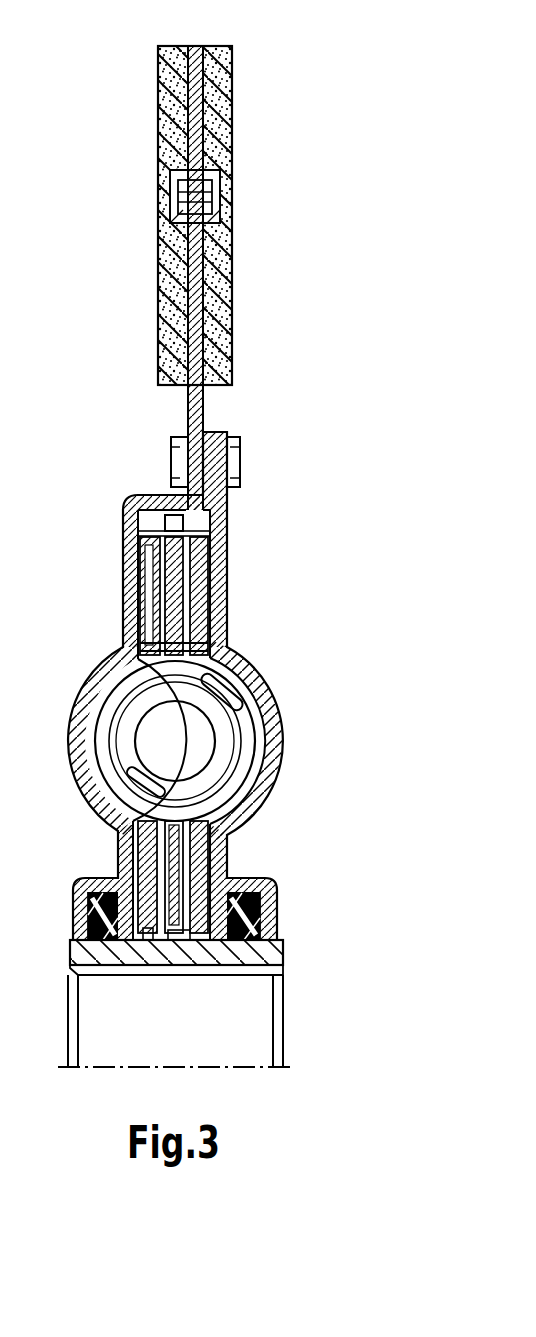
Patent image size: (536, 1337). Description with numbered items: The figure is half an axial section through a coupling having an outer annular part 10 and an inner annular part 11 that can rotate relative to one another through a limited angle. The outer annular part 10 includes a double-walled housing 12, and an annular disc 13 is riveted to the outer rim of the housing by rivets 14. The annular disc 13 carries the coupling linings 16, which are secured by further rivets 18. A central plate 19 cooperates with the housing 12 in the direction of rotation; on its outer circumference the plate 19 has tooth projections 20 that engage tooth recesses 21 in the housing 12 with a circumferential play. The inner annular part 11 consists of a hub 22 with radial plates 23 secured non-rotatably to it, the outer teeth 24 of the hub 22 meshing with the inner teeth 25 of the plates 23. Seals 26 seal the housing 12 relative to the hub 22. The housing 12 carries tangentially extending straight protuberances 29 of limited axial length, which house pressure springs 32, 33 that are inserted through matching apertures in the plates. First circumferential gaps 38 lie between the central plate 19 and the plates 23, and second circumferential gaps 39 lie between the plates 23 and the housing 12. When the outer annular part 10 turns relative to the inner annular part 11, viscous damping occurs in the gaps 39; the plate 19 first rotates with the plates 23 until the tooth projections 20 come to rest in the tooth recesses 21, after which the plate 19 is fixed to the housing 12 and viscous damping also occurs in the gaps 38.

The outer annular part 10 is at (84, 585).
The inner annular part 11 is at (318, 993).
The double-walled housing 12 is at (218, 600).
The annular disc 13 is at (193, 412).
The rivets 14 is at (238, 455).
The coupling linings 16 is at (232, 97).
The rivets 18 is at (205, 190).
The central plate 19 is at (175, 572).
The tooth projections 20 is at (178, 525).
The tooth recesses 21 is at (205, 527).
The hub 22 is at (267, 957).
The radial plates 23 is at (212, 868).
The outer teeth 24 is at (180, 942).
The inner teeth 25 is at (147, 942).
The seals 26 is at (262, 912).
The protuberances 29 is at (265, 693).
The pressure spring 32 is at (245, 768).
The pressure spring 33 is at (218, 725).
The first circumferential gaps 38 is at (213, 637).
The second circumferential gaps 39 is at (217, 847).